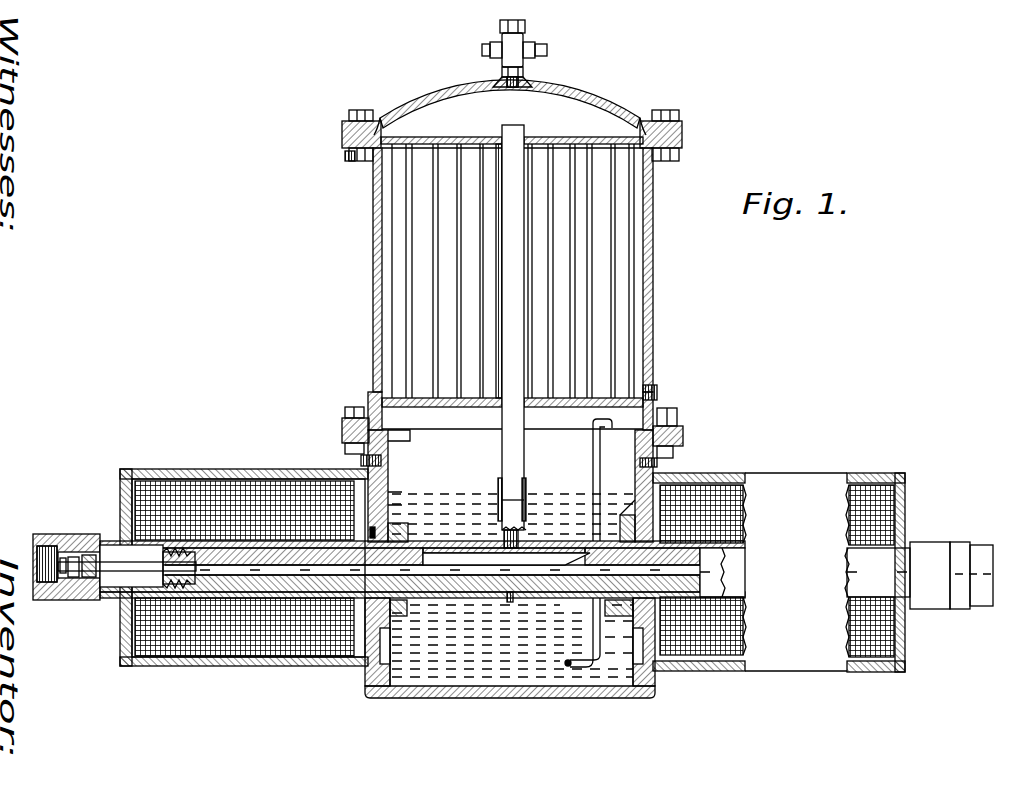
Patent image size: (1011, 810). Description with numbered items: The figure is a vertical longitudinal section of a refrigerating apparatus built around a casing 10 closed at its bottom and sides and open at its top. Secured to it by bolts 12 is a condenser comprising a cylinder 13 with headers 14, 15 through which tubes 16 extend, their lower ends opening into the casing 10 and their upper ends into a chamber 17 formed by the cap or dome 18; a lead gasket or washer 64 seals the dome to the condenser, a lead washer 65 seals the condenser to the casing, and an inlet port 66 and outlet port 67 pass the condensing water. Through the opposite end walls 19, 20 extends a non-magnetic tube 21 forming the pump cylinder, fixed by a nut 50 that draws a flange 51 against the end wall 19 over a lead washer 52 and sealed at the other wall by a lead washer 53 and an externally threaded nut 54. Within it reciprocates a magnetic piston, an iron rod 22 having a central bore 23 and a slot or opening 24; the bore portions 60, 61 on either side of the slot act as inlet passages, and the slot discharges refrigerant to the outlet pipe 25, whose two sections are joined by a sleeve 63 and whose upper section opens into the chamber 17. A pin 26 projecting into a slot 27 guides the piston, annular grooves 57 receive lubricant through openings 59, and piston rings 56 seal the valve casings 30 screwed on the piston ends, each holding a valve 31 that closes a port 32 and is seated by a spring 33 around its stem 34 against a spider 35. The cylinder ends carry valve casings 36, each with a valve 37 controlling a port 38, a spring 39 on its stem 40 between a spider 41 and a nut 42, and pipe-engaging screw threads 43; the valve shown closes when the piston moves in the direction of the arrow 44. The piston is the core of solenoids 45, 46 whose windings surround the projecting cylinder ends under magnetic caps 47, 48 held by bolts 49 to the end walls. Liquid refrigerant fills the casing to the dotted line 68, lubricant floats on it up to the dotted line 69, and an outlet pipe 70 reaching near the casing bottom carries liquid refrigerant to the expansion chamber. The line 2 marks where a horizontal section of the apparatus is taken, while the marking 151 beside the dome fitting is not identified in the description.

The valve fitting 151 is at (525, 28).
The cap or dome 18 is at (574, 94).
The header 15 is at (445, 137).
The chamber 17 is at (557, 117).
The lead gasket or washer 64 is at (345, 141).
The outlet port 67 is at (345, 156).
The cylinder 13 is at (375, 292).
The tubes 16 is at (395, 258).
The header 14 is at (418, 430).
The inlet port 66 is at (657, 390).
The lead washer 65 is at (342, 430).
The bolts 12 is at (350, 409).
The bolts 49 is at (348, 455).
The end wall 19 is at (418, 540).
The end wall 20 is at (583, 540).
The lead washer 52 is at (388, 508).
The flange 51 is at (402, 492).
The nut 50 is at (412, 522).
The dotted line 69 is at (476, 494).
The outlet pipe 25 is at (525, 460).
The sleeve 63 is at (526, 497).
The outlet pipe 70 is at (593, 462).
The lead washer 53 is at (620, 530).
The tube 21 is at (457, 531).
The slot or opening 24 is at (540, 556).
The portion of central bore 60 is at (422, 569).
The annular grooves 57 is at (423, 556).
The portion of central bore 61 is at (758, 572).
The cap 47 is at (286, 474).
The solenoid 45 is at (245, 482).
The packing or piston rings 56 is at (165, 541).
The guiding and supporting wall or spider 35 is at (188, 553).
The spring 33 is at (168, 600).
The stem 34 is at (185, 598).
The arrow 44 is at (268, 676).
The cap 48 is at (772, 484).
The solenoid 46 is at (862, 485).
The valve casing 36 is at (38, 535).
The pipe engaging screw threads 43 is at (37, 558).
The section line 2 is at (40, 567).
The valve 37 is at (131, 566).
The nut 42 is at (62, 556).
The guiding and supporting spider 41 is at (75, 556).
The port 38 is at (90, 554).
The spring 39 is at (71, 580).
The stem 40 is at (78, 582).
The valve casing 30 is at (163, 553).
The valve 31 is at (163, 568).
The port 32 is at (163, 580).
The casing 10 is at (515, 698).
The slot 27 is at (512, 641).
The ports or openings 59 is at (410, 600).
The dotted line 68 is at (447, 598).
The iron rod 22 is at (468, 598).
The pin 26 is at (509, 602).
The central longitudinally extended bore 23 is at (540, 576).
The nut 54 is at (600, 600).